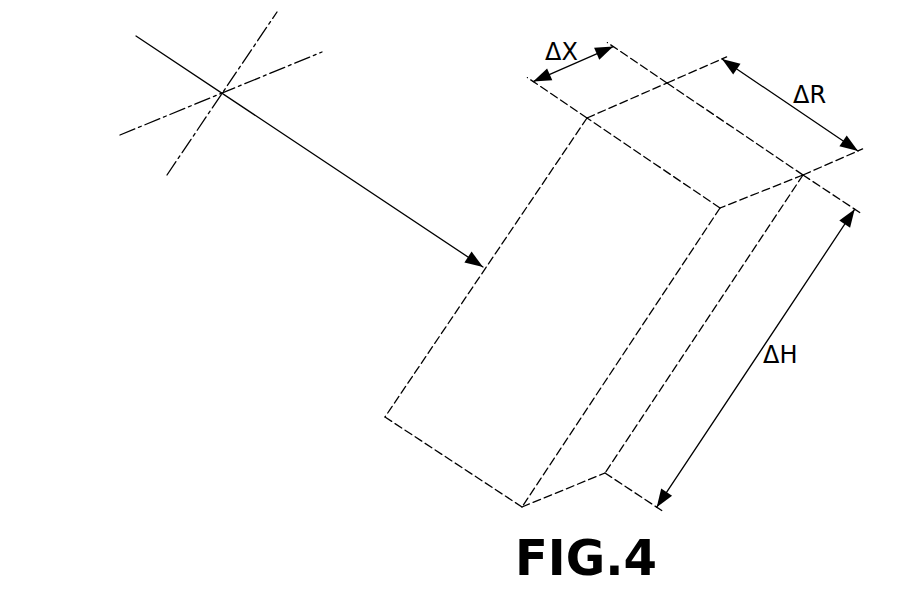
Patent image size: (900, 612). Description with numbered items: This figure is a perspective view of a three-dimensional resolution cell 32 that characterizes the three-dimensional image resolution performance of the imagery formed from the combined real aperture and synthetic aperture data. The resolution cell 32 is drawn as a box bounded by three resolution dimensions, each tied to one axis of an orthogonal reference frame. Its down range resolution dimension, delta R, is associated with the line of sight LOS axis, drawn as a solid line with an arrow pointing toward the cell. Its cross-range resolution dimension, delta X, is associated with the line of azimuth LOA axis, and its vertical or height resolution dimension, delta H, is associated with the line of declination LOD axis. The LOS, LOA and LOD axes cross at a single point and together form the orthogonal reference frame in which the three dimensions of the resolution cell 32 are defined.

The resolution cell 32 is at (450, 318).
The line of sight axis LOS is at (317, 155).
The line of azimuth axis LOA is at (140, 125).
The line of declination axis LOD is at (177, 160).